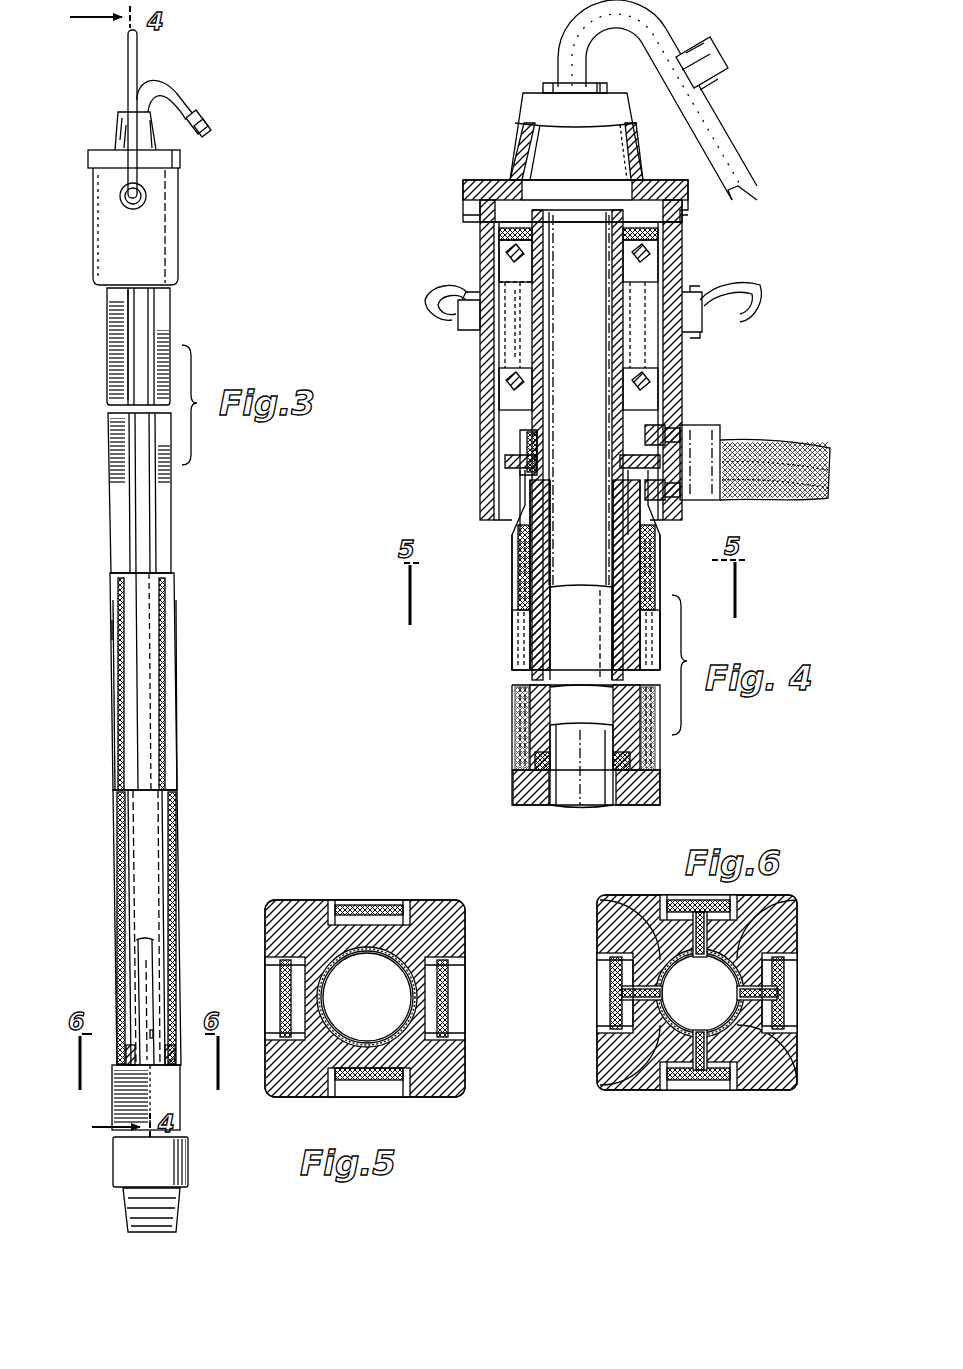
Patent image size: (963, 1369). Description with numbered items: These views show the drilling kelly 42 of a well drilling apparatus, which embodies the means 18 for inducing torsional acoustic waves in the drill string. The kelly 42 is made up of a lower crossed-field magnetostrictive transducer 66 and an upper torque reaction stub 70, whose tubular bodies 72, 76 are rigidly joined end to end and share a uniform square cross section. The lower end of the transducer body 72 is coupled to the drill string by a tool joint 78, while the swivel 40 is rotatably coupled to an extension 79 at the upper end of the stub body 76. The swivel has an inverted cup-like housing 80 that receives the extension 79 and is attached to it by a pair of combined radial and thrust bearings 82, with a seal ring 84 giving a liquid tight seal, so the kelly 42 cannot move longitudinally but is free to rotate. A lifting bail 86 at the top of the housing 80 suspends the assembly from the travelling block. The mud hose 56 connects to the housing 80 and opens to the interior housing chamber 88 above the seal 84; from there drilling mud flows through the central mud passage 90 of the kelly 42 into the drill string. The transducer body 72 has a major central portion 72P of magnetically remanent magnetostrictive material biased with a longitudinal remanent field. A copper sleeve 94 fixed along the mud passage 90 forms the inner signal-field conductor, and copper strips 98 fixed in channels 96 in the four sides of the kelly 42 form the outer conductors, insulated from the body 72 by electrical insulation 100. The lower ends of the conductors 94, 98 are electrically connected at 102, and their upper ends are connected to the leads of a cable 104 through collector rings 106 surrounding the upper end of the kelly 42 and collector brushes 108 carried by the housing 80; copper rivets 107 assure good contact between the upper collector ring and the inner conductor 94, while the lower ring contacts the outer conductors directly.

In FIG. 3, the means for inducing torsional acoustic waves 18 is at (82, 715).
In FIG. 4, the swivel 40 is at (470, 348).
In FIG. 3, the drilling kelly 42 is at (180, 682).
In FIG. 4, the drilling kelly 42 is at (540, 812).
In FIG. 3, the mud hose 56 is at (215, 130).
In FIG. 4, the mud hose 56 is at (762, 162).
In FIG. 3, the crossed-field magnetostrictive transducer 66 is at (182, 811).
In FIG. 4, the crossed-field magnetostrictive transducer 66 is at (510, 707).
In FIG. 6, the crossed-field magnetostrictive transducer 66 is at (595, 950).
In FIG. 3, the torque reaction stub 70 is at (168, 302).
In FIG. 4, the torque reaction stub 70 is at (510, 612).
In FIG. 3, the transducer body 72 is at (176, 615).
In FIG. 4, the transducer body 72 is at (528, 778).
In FIG. 6, the transducer body 72 is at (600, 925).
In FIG. 3, the major central portion 72P is at (178, 728).
In FIG. 3, the stub body 76 is at (160, 305).
In FIG. 4, the stub body 76 is at (512, 580).
In FIG. 5, the stub body 76 is at (440, 900).
In FIG. 3, the tool joint 78 is at (122, 1205).
In FIG. 4, the extension 79 is at (520, 322).
In FIG. 3, the swivel housing 80 is at (175, 222).
In FIG. 4, the swivel housing 80 is at (702, 330).
In FIG. 4, the combined radial and thrust bearings 82 is at (506, 262).
In FIG. 4, the seal ring 84 is at (640, 236).
In FIG. 3, the lifting bail 86 is at (138, 55).
In FIG. 4, the lifting bail 86 is at (745, 285).
In FIG. 4, the interior housing chamber 88 is at (545, 158).
In FIG. 4, the mud passage 90 is at (585, 790).
In FIG. 5, the mud passage 90 is at (383, 1009).
In FIG. 6, the mud passage 90 is at (716, 1012).
In FIG. 3, the sleeve 94 is at (145, 960).
In FIG. 4, the sleeve 94 is at (570, 640).
In FIG. 5, the sleeve 94 is at (420, 945).
In FIG. 6, the sleeve 94 is at (660, 1005).
In FIG. 4, the channels 96 is at (655, 578).
In FIG. 5, the channels 96 is at (300, 898).
In FIG. 6, the channels 96 is at (740, 897).
In FIG. 4, the strips 98 is at (655, 543).
In FIG. 5, the strips 98 is at (360, 898).
In FIG. 6, the strips 98 is at (675, 900).
In FIG. 4, the electrical insulation 100 is at (655, 560).
In FIG. 6, the electrical insulation 100 is at (660, 960).
In FIG. 4, the electrical connection 102 is at (632, 760).
In FIG. 6, the electrical connection 102 is at (625, 930).
In FIG. 4, the cable 104 is at (790, 440).
In FIG. 4, the collector rings 106 is at (510, 480).
In FIG. 4, the copper rivets 107 is at (527, 450).
In FIG. 4, the collector brushes 108 is at (660, 432).